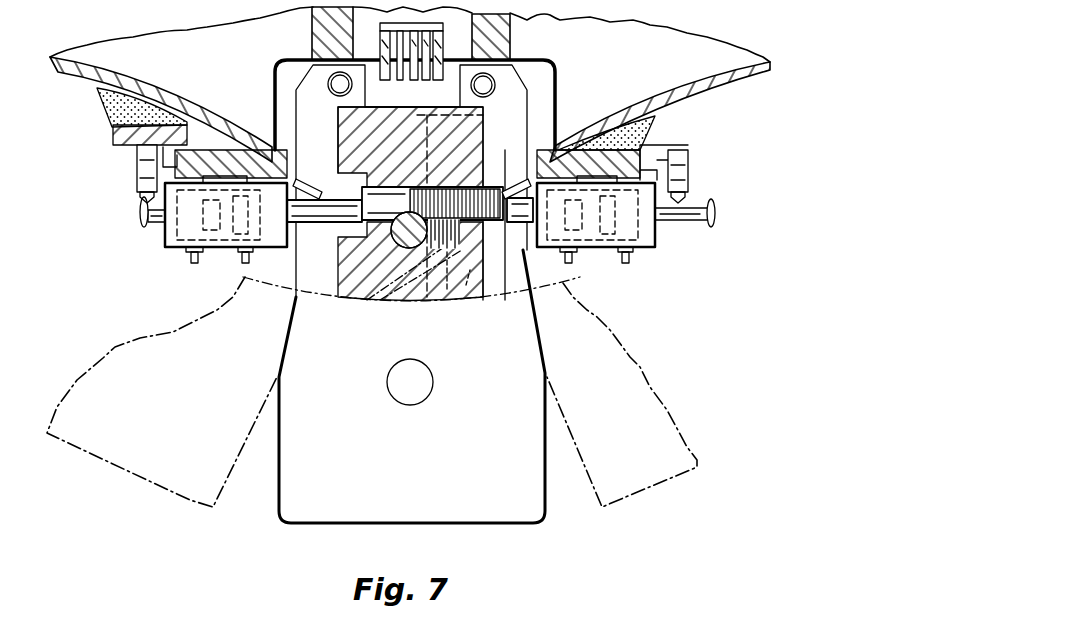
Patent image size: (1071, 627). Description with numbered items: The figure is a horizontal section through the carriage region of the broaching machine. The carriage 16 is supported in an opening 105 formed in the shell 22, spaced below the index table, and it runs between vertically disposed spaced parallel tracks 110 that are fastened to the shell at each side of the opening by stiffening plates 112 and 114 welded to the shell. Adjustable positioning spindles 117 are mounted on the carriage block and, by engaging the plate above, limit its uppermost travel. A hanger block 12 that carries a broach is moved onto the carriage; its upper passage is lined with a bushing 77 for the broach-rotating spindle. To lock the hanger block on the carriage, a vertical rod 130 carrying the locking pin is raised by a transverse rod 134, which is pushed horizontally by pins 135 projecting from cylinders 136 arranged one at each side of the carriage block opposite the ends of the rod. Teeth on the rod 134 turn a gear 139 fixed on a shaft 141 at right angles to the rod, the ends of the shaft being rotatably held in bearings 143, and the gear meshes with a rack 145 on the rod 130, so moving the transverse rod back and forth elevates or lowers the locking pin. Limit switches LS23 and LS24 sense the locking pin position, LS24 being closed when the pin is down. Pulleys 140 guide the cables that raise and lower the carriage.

The hanger block 12 is at (163, 472).
The carriage 16 is at (530, 287).
The shell 22 is at (745, 58).
The bushing 77 is at (390, 380).
The opening 105 is at (548, 72).
The tracks 110 is at (302, 193).
The stiffening plate 112 is at (173, 162).
The stiffening plate 114 is at (115, 136).
The adjustable positioning spindle 117 is at (342, 87).
The rod 130 is at (340, 256).
The rod 134 is at (493, 252).
The pin 135 is at (337, 226).
The cylinder 136 is at (224, 248).
The gear 139 is at (447, 290).
The pulley 140 is at (413, 40).
The shaft 141 is at (397, 283).
The bearing 143 is at (487, 110).
The rack 145 is at (383, 292).
The limit switch LS23 is at (137, 183).
The limit switch LS24 is at (688, 176).